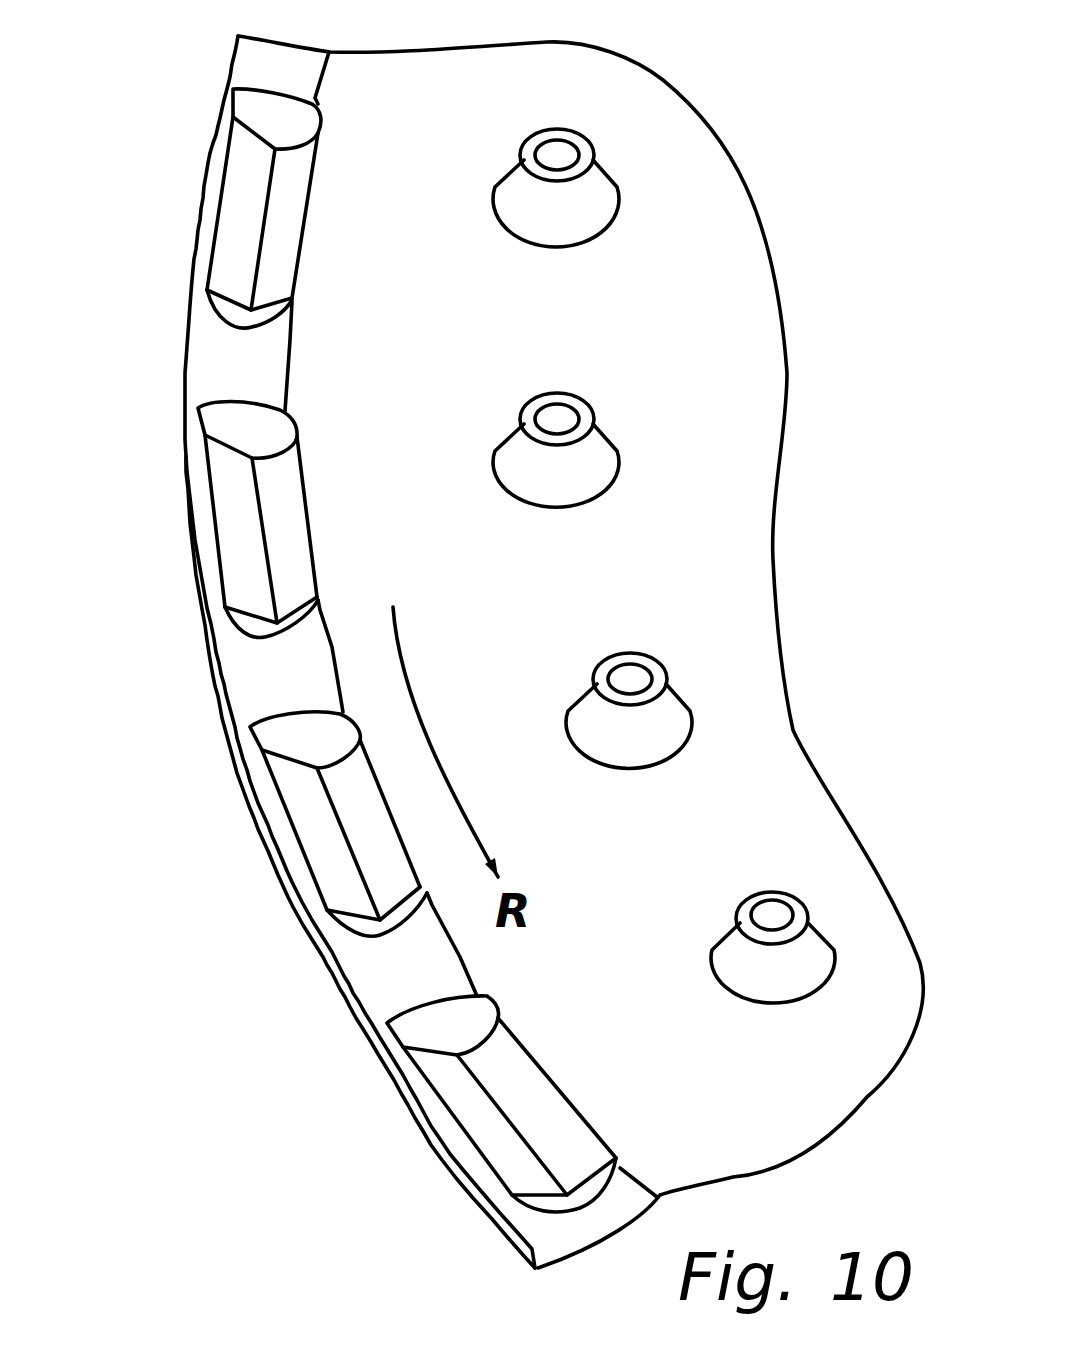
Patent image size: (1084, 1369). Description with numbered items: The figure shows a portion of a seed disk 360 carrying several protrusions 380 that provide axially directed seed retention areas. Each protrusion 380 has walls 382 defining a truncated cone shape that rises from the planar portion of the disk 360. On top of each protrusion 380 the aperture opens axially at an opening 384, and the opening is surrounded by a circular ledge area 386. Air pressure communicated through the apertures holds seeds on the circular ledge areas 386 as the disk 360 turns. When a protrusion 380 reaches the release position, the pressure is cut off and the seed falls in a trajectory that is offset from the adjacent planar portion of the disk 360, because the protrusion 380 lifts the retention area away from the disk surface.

The disk 360 is at (160, 420).
The protrusions 380 is at (715, 591).
The walls 382 is at (763, 983).
The aperture opening 384 is at (773, 907).
The circular ledge areas 386 is at (740, 897).